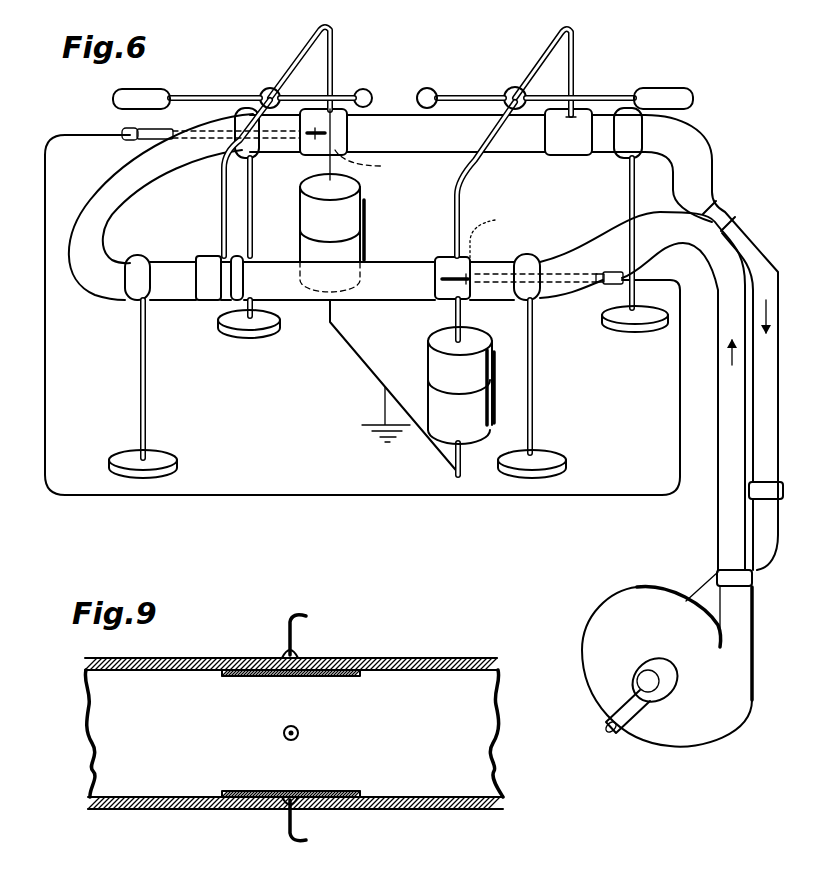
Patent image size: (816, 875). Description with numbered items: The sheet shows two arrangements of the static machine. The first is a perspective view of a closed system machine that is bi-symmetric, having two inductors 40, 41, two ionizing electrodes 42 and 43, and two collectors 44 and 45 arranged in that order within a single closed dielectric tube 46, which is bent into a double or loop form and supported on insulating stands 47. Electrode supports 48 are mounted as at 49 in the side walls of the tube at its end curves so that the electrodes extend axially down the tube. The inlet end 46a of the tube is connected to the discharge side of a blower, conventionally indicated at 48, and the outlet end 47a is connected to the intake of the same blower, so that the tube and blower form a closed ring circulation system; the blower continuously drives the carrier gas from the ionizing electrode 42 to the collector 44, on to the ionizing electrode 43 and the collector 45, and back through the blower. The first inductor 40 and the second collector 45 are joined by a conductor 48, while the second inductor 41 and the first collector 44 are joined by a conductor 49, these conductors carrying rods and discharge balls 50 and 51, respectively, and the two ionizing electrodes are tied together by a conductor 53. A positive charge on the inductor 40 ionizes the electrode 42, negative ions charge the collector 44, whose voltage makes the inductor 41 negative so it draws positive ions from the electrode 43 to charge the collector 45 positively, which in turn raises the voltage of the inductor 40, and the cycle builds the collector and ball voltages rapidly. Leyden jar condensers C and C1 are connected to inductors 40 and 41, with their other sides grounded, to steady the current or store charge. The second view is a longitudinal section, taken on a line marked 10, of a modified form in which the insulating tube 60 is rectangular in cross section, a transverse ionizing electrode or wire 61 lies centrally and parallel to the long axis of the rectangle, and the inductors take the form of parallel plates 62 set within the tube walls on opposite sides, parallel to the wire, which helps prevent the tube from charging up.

In FIG. 6, the first inductor 40 is at (443, 300).
In FIG. 6, the second inductor 41 is at (306, 158).
In FIG. 6, the ionizing electrode 42 is at (486, 252).
In FIG. 6, the ionizing electrode 43 is at (373, 164).
In FIG. 6, the first collector 44 is at (213, 299).
In FIG. 6, the second collector 45 is at (557, 143).
In FIG. 6, the closed dielectric tube 46 is at (295, 299).
In FIG. 6, the inlet end of the tube 46a is at (646, 429).
In FIG. 6, the insulating stands 47 is at (254, 212).
In FIG. 6, the outlet end of the tube 47a is at (713, 203).
In FIG. 6, the electrode supports / blower / conductor 48 is at (128, 132).
In FIG. 6, the electrode mounting / conductor 49 is at (163, 122).
In FIG. 6, the discharge ball 50 is at (352, 90).
In FIG. 6, the discharge ball 51 is at (440, 90).
In FIG. 6, the conductor 53 is at (367, 497).
In FIG. 6, the Leyden jar condenser C is at (424, 362).
In FIG. 6, the Leyden jar condenser C1 is at (372, 230).
In FIG. 9, the section line 10 is at (306, 600).
In FIG. 9, the insulating tube 60 is at (430, 658).
In FIG. 9, the transverse ionizing electrode or wire 61 is at (298, 728).
In FIG. 9, the parallel inductor plates 62 is at (340, 660).